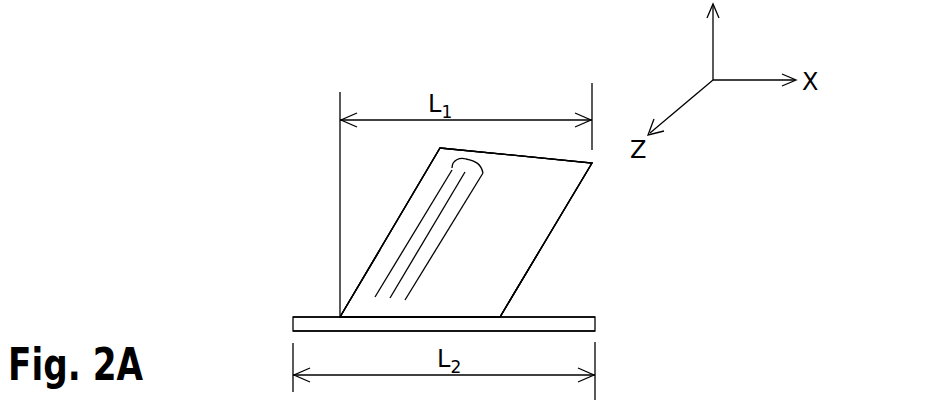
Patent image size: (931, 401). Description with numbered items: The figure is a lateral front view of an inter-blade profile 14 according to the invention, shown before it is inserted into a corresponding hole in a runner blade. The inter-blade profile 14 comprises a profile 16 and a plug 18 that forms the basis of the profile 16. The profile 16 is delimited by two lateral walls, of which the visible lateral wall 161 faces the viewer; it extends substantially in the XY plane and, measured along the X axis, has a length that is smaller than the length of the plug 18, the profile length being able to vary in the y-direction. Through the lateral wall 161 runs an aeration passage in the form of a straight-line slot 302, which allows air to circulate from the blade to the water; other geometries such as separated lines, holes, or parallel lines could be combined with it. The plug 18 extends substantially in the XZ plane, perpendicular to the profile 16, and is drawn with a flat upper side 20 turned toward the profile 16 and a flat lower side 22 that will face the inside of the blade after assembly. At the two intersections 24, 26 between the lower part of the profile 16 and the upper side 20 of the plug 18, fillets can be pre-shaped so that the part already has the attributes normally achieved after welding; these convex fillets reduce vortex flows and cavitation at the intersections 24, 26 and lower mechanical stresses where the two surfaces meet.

The inter-blade profile 14 is at (370, 203).
The profile 16 is at (507, 205).
The lateral wall 161 is at (509, 246).
The slot 302 is at (470, 163).
The plug 18 is at (292, 323).
The upper side 20 is at (306, 316).
The lower side 22 is at (318, 333).
The intersection 24 is at (338, 314).
The intersection 26 is at (478, 316).